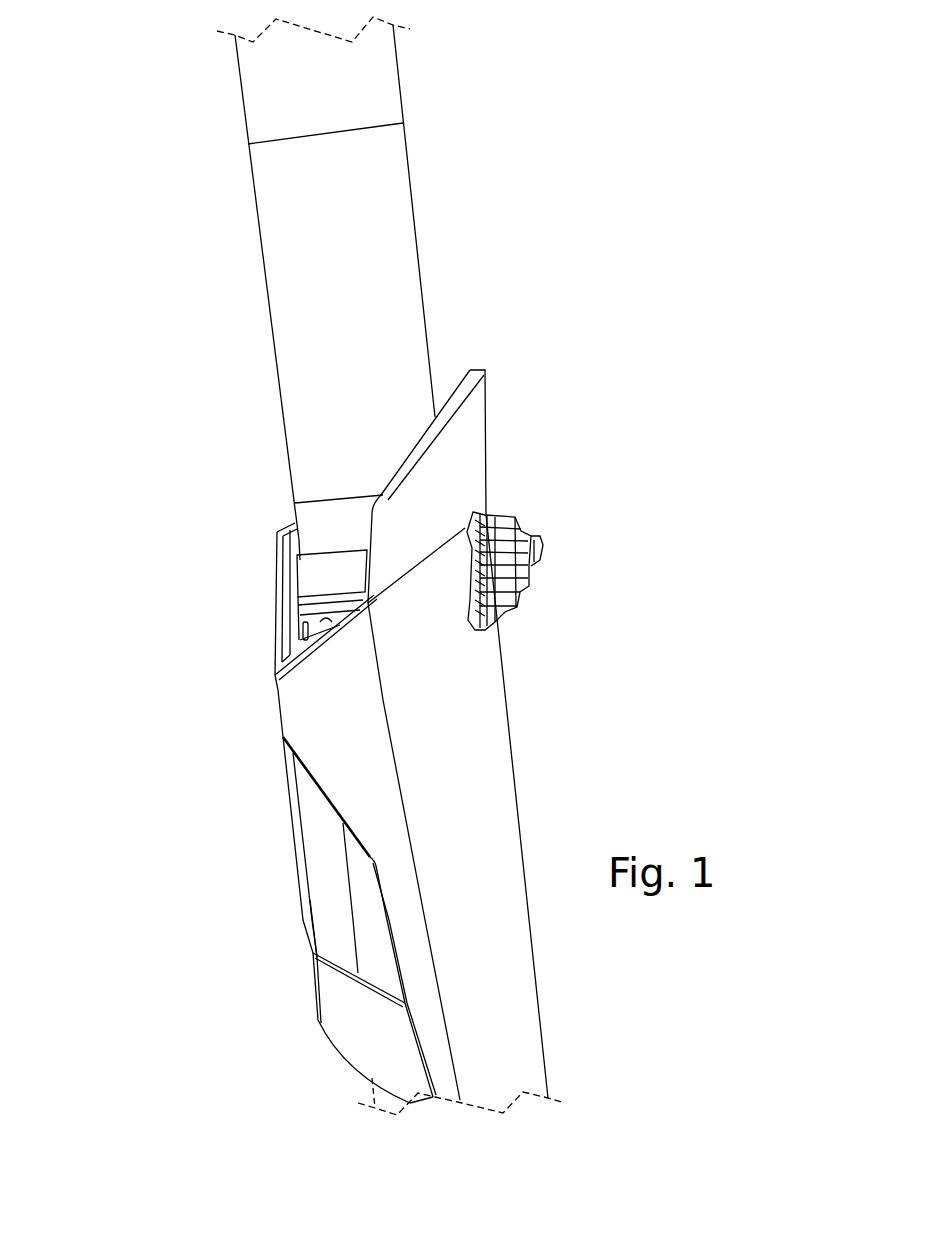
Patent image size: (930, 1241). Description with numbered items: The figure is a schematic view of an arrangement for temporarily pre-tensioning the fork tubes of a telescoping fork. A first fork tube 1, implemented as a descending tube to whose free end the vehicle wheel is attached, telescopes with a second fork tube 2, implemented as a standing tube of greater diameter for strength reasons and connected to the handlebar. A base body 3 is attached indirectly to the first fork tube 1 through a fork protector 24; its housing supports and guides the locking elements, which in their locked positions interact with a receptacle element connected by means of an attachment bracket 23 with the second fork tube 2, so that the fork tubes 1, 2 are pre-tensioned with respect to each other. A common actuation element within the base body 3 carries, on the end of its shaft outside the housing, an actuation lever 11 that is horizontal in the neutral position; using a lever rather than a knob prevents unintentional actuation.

The first fork tube 1 is at (375, 912).
The second fork tube 2 is at (350, 317).
The base body 3 is at (498, 545).
The actuation lever 11 is at (541, 540).
The attachment bracket 23 is at (328, 577).
The fork protector 24 is at (455, 733).